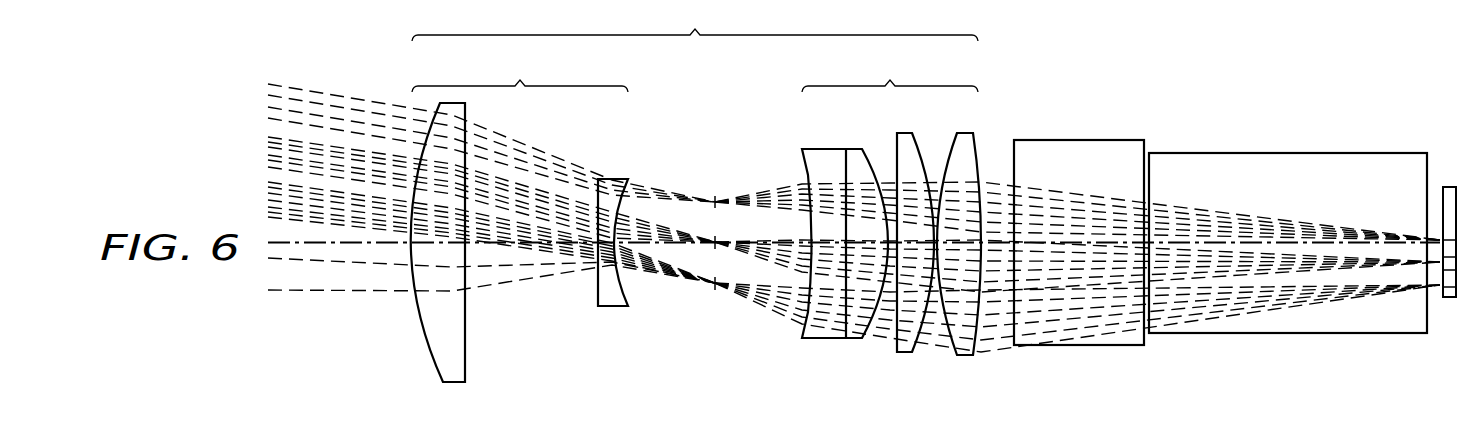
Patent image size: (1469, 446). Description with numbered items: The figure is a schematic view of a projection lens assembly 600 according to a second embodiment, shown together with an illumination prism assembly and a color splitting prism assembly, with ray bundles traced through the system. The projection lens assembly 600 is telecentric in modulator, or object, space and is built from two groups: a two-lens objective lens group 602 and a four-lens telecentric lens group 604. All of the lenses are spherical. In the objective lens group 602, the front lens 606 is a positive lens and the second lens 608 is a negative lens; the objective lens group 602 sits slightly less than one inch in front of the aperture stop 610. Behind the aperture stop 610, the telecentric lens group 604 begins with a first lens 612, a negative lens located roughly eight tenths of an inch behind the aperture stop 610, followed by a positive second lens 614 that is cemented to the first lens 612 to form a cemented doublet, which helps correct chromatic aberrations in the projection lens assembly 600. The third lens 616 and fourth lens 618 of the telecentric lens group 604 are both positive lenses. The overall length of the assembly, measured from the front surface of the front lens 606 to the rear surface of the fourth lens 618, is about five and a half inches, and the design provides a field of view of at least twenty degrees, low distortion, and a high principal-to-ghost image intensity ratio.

The projection lens assembly 600 is at (695, 20).
The objective lens group 602 is at (520, 71).
The telecentric lens group 604 is at (890, 71).
The front lens 606 is at (426, 338).
The second lens 608 is at (612, 309).
The aperture stop 610 is at (715, 298).
The first lens 612 is at (823, 340).
The second lens 614 is at (855, 340).
The third lens 616 is at (905, 354).
The fourth lens 618 is at (965, 357).